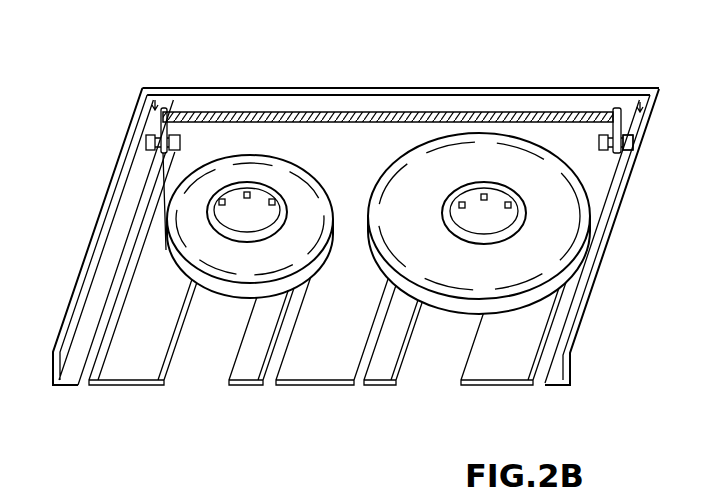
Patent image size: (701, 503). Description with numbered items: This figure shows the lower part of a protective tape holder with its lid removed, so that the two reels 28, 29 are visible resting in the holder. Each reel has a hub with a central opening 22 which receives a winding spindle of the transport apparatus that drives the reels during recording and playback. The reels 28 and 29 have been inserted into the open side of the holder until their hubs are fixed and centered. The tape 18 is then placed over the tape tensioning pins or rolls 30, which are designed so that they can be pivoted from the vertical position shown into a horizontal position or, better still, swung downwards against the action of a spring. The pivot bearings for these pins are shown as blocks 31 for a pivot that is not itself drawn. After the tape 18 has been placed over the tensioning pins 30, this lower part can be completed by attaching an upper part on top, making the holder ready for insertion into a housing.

The tape 18 is at (383, 112).
The openings 22 is at (213, 208).
The reel 28 is at (182, 243).
The reel 29 is at (547, 253).
The tape tensioning pins or rolls 30 is at (163, 110).
The blocks 31 is at (640, 137).